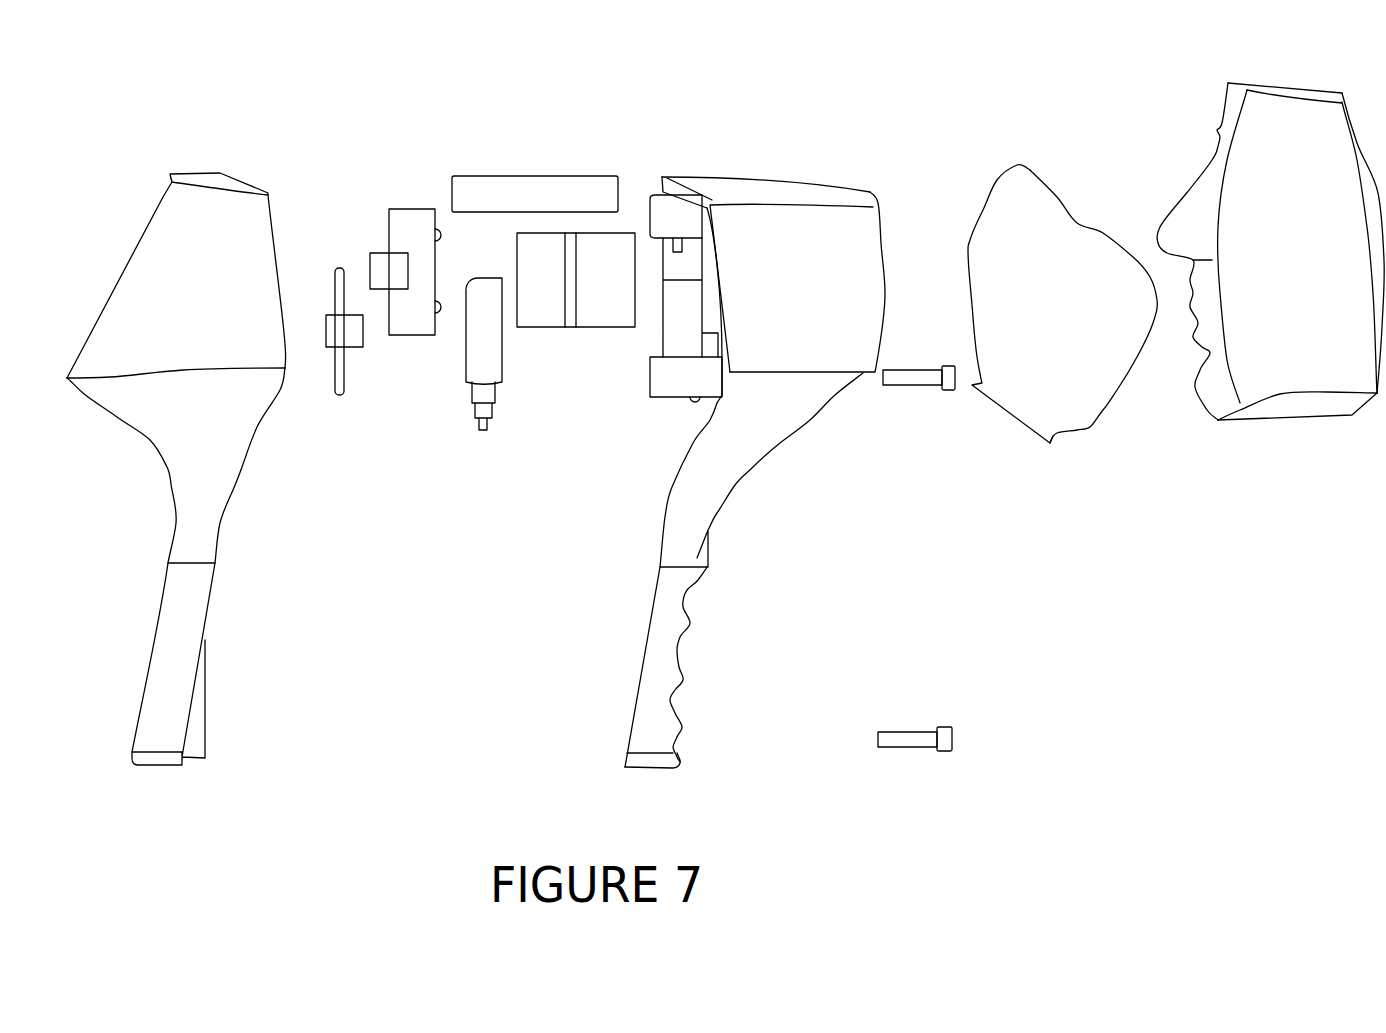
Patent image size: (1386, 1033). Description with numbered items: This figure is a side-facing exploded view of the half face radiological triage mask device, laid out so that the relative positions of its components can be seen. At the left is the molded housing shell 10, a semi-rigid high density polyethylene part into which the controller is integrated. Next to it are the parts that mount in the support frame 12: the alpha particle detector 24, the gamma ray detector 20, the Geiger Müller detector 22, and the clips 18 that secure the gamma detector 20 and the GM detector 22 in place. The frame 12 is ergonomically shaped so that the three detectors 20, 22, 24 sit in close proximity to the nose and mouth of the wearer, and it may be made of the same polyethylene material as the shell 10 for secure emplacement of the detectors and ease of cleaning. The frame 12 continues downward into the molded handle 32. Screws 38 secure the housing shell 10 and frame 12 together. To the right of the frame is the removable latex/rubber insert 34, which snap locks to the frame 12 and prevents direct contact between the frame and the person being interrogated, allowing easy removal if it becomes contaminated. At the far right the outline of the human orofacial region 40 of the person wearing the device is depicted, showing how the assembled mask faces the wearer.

The housing shell 10 is at (218, 208).
The support frame 12 is at (722, 187).
The clips 18 is at (350, 340).
The gamma ray detector 20 is at (598, 295).
The Geiger Müller detector 22 is at (493, 347).
The alpha particle detector 24 is at (496, 195).
The molded handle 32 is at (660, 645).
The removable latex/rubber insert 34 is at (1052, 387).
The screws 38 is at (917, 378).
The human orofacial region 40 is at (1280, 333).